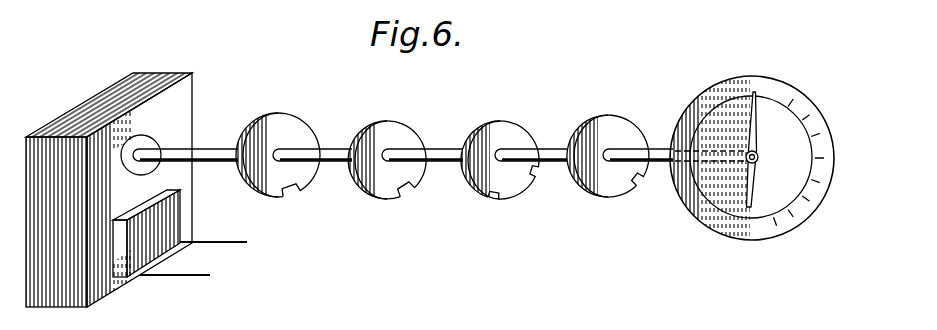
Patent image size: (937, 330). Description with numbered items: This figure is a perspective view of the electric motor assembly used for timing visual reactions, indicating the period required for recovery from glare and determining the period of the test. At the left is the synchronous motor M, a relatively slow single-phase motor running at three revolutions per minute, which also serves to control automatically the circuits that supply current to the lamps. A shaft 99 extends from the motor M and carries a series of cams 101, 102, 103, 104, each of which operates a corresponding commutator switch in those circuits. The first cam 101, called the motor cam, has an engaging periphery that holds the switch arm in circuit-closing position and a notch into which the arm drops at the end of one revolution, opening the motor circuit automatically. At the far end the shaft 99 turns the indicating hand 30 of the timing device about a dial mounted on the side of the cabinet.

The synchronous motor M is at (232, 80).
The shaft 99 is at (662, 163).
The motor cam 101 is at (297, 123).
The cam 102 is at (401, 130).
The cam 103 is at (512, 128).
The cam 104 is at (623, 123).
The indicating hand 30 is at (760, 120).